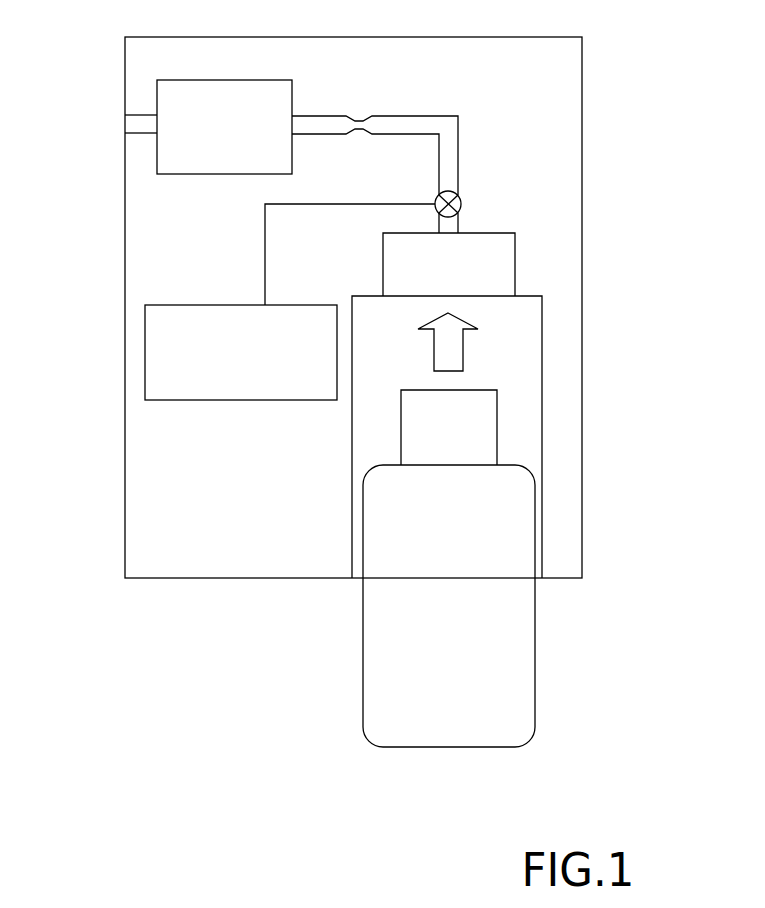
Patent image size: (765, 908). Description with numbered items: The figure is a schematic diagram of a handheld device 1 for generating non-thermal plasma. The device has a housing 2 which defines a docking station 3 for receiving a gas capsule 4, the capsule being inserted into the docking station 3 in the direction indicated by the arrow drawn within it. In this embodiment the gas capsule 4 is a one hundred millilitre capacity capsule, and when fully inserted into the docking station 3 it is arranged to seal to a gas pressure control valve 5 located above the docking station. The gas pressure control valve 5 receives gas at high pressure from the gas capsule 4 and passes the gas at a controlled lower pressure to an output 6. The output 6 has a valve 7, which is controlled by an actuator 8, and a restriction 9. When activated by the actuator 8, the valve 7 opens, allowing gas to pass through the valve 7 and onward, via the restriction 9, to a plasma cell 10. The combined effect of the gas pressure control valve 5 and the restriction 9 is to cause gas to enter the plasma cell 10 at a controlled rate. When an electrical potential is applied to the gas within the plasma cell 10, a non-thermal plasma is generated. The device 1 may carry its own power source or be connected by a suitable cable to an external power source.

The handheld device 1 is at (150, 642).
The housing 2 is at (121, 467).
The docking station 3 is at (351, 515).
The gas capsule 4 is at (420, 635).
The gas pressure control valve 5 is at (476, 258).
The output 6 is at (460, 132).
The valve 7 is at (461, 203).
The actuator 8 is at (145, 370).
The restriction 9 is at (356, 112).
The plasma cell 10 is at (257, 174).